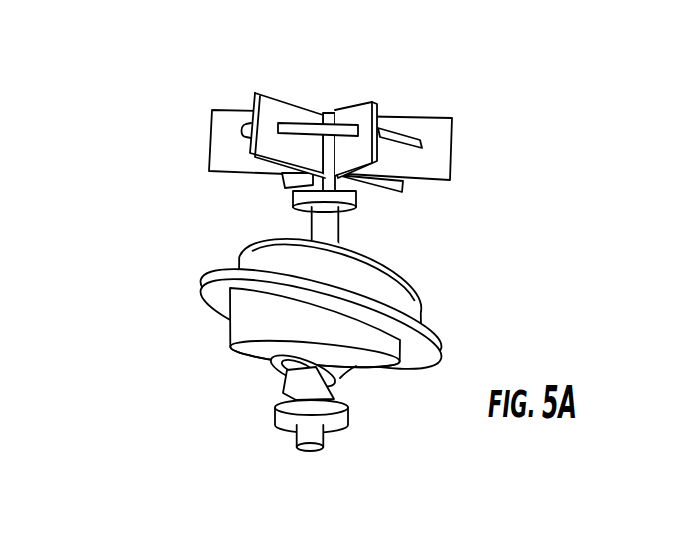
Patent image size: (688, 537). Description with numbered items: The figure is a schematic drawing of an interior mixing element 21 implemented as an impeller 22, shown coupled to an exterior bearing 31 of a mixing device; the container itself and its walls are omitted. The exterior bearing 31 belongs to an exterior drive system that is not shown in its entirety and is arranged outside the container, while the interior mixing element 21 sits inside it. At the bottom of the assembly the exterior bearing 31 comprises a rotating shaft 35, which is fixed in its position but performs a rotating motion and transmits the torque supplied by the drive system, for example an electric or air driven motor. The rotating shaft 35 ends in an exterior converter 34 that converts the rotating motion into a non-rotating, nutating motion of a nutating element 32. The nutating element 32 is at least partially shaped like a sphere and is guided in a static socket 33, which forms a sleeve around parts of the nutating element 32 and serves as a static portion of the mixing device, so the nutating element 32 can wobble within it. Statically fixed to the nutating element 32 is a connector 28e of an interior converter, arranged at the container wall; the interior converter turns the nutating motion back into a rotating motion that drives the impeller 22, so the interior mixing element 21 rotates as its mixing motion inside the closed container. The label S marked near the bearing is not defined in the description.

The interior mixing element 21 is at (227, 130).
The impeller 22 is at (423, 130).
The connector 28e is at (412, 307).
The exterior bearing 31 is at (232, 328).
The nutating element 32 is at (347, 368).
The static socket 33 is at (245, 343).
The exterior converter 34 is at (271, 373).
The rotating shaft 35 is at (303, 439).
The seal S is at (350, 370).